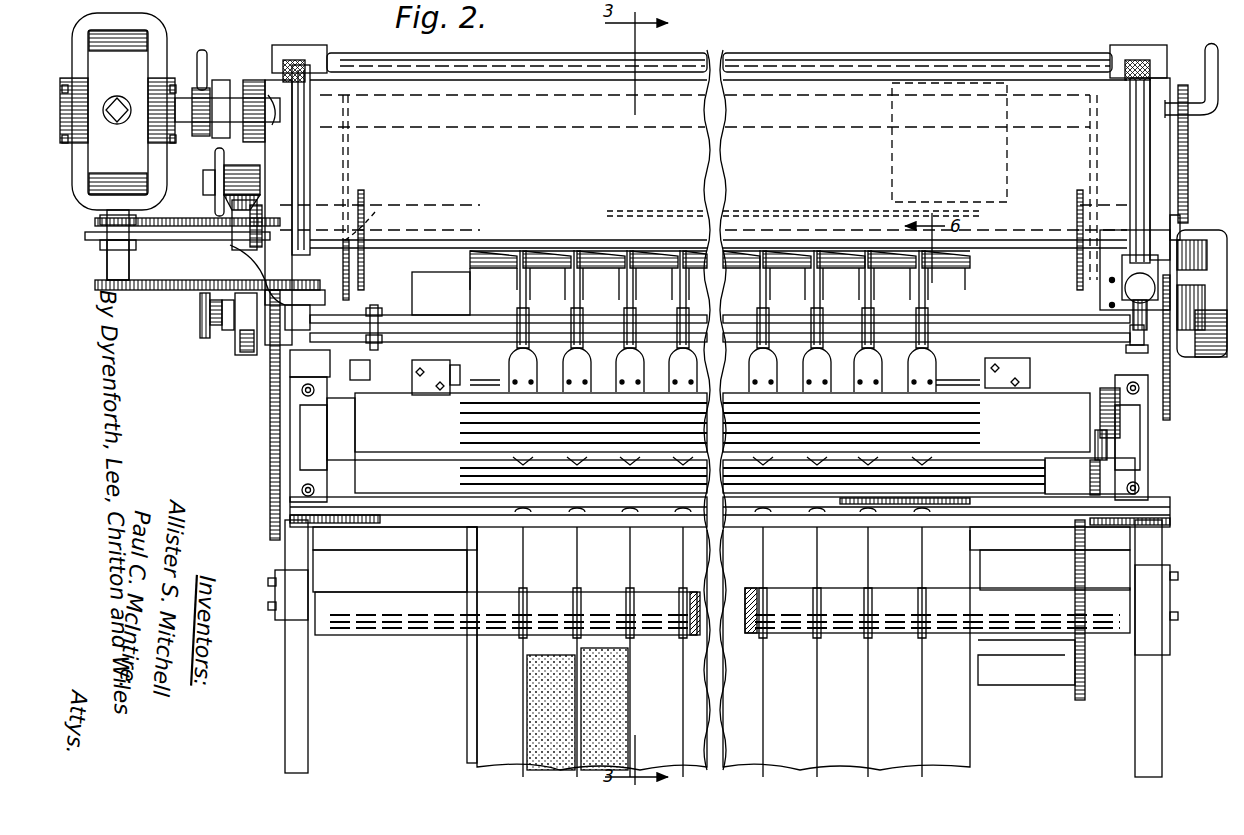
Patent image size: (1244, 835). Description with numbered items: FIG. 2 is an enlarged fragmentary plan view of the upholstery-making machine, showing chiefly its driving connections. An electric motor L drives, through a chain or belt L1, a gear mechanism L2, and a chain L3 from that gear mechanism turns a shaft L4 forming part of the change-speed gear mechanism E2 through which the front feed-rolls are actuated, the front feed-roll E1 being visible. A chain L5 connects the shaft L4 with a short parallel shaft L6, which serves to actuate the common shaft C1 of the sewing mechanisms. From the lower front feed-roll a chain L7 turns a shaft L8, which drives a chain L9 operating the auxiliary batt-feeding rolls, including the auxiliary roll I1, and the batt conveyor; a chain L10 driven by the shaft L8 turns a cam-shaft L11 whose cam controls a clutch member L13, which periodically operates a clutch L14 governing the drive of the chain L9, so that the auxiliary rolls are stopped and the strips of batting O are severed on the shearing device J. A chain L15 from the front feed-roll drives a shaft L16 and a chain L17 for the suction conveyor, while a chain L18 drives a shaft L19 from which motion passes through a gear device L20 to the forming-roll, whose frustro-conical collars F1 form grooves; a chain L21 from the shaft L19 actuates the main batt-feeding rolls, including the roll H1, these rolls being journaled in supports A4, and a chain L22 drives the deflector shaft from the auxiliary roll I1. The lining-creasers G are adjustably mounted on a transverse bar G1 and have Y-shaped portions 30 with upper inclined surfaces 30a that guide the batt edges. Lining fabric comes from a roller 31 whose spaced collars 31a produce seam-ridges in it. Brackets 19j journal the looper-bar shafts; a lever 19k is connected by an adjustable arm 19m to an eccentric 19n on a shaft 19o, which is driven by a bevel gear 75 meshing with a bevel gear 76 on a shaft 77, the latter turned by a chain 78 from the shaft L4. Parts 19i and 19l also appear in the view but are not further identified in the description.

The front feed-roll E1 is at (788, 95).
The change-speed gear mechanism E2 is at (138, 68).
The electric motor L is at (897, 148).
The chain or belt L1 is at (812, 210).
The gear mechanism L2 is at (441, 293).
The chain L3 is at (112, 265).
The shaft L4 is at (150, 287).
The chain L5 is at (178, 225).
The short parallel shaft L6 is at (240, 210).
The chain L7 is at (362, 255).
The shaft L8 is at (350, 290).
The chain L9 is at (265, 390).
The chain L10 is at (375, 212).
The cam-shaft L11 is at (320, 200).
The clutch member L13 is at (98, 240).
The clutch L14 is at (215, 335).
The chain L15 is at (1185, 158).
The shaft L16 is at (1178, 222).
The chain L17 is at (1077, 275).
The chain L18 is at (1090, 170).
The shaft L19 is at (1100, 290).
The gear device L20 is at (1198, 320).
The chain L21 is at (1130, 360).
The chain L22 is at (1105, 462).
The common shaft C1 is at (255, 172).
The frustro-conical rollers or collars F1 is at (548, 262).
The lining-creasers G is at (578, 360).
The transverse bar G1 is at (990, 368).
The main batt-feeding roll H1 is at (365, 405).
The auxiliary batt-feeding roll I1 is at (370, 480).
The shearing device J is at (420, 500).
The strips of batting O is at (600, 692).
The supports A4 is at (340, 437).
The arm 19i is at (307, 363).
The brackets 19j is at (1130, 345).
The lever 19k is at (478, 340).
The clamp 19l is at (385, 325).
The adjustable arm 19m is at (412, 375).
The eccentric 19n is at (388, 302).
The shaft 19o is at (950, 318).
The Y-shaped portions 30 is at (930, 370).
The upper inclined surfaces 30a is at (800, 360).
The roller 31 is at (420, 615).
The spaced rollers or collars 31a is at (575, 595).
The bevel gear 75 is at (280, 320).
The bevel gear 76 is at (255, 325).
The shaft 77 is at (297, 300).
The chain 78 is at (230, 278).